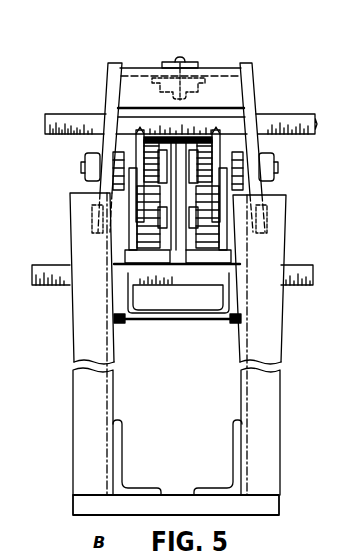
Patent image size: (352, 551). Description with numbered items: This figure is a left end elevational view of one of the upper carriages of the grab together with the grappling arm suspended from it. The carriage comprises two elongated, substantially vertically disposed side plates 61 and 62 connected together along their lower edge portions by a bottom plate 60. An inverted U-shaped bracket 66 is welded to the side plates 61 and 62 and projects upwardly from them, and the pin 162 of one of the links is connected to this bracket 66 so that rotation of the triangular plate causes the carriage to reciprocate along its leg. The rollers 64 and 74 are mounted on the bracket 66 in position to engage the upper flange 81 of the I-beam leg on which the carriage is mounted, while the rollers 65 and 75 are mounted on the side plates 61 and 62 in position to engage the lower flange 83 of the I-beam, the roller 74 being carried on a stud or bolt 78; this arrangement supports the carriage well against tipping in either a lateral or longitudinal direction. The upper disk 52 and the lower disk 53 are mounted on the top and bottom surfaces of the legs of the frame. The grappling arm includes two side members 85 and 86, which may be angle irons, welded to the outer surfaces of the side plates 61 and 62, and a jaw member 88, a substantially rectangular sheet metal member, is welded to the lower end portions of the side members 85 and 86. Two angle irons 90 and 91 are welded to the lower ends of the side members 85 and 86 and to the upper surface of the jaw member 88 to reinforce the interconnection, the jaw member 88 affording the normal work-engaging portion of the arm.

The pin 162 is at (184, 58).
The upper disk 52 is at (55, 112).
The inverted U-shaped bracket 66 is at (244, 78).
The roller 64 is at (122, 138).
The roller 65 is at (150, 232).
The roller 74 is at (240, 137).
The upper flange 81 is at (202, 135).
The roller 75 is at (247, 245).
The stud or bolt 78 is at (278, 173).
The lower disk 53 is at (313, 281).
The side plate 61 is at (122, 295).
The side plate 62 is at (236, 307).
The bottom plate 60 is at (170, 313).
The lower flange 83 is at (196, 265).
The side member 85 is at (88, 402).
The side member 86 is at (262, 408).
The angle iron 91 is at (118, 452).
The angle iron 90 is at (235, 450).
The jaw member 88 is at (267, 507).